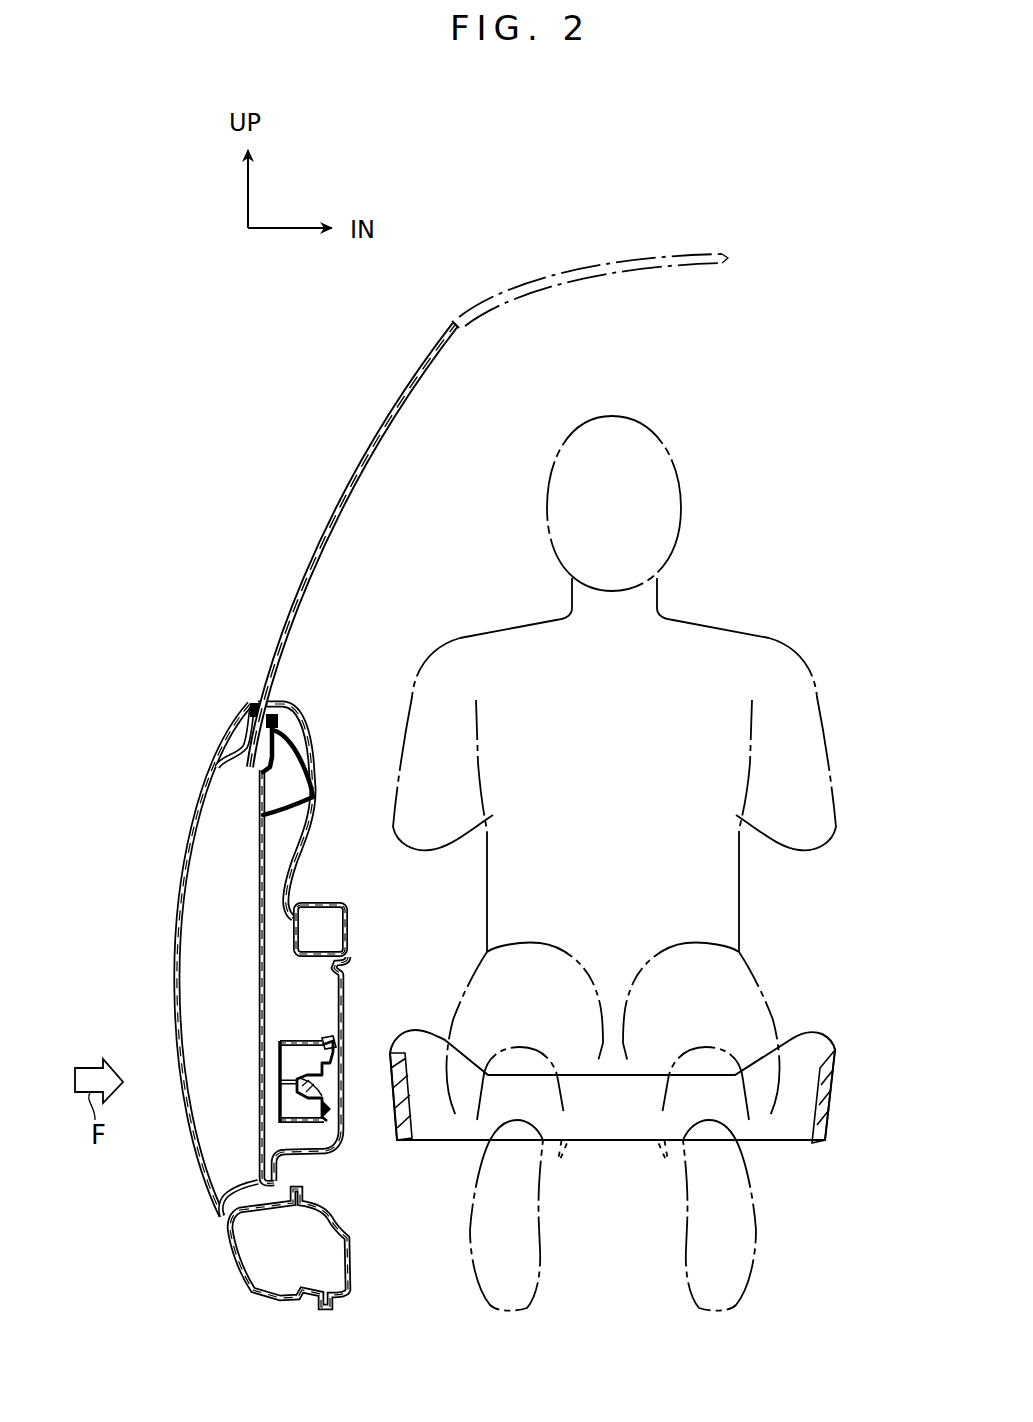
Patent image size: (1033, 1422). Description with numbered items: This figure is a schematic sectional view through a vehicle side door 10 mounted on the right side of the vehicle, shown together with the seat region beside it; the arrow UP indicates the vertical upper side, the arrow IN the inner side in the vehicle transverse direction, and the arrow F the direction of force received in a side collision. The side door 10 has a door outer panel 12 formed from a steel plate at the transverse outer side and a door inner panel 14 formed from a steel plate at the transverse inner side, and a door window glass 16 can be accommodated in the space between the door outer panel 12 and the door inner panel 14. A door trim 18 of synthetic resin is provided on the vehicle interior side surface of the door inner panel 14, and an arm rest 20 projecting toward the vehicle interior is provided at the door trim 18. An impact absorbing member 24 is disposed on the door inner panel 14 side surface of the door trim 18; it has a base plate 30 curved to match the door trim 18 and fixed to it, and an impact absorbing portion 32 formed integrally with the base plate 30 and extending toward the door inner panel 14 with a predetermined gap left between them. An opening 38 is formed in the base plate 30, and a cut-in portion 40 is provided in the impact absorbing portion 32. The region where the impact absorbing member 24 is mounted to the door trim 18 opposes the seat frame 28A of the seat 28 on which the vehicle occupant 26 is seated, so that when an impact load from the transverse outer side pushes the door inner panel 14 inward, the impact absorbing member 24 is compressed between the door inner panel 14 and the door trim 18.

The side door 10 is at (167, 822).
The door outer panel 12 is at (178, 958).
The door inner panel 14 is at (258, 945).
The door window glass 16 is at (297, 582).
The door trim 18 is at (310, 797).
The arm rest 20 is at (333, 902).
The impact absorbing member 24 is at (310, 995).
The vehicle occupant 26 is at (725, 655).
The seat 28 is at (637, 1119).
The seat frame 28A is at (398, 1135).
The base plate 30 is at (337, 1067).
The impact absorbing portion 32 is at (292, 1030).
The opening 38 is at (333, 1095).
The cut-in portion 40 is at (314, 1086).